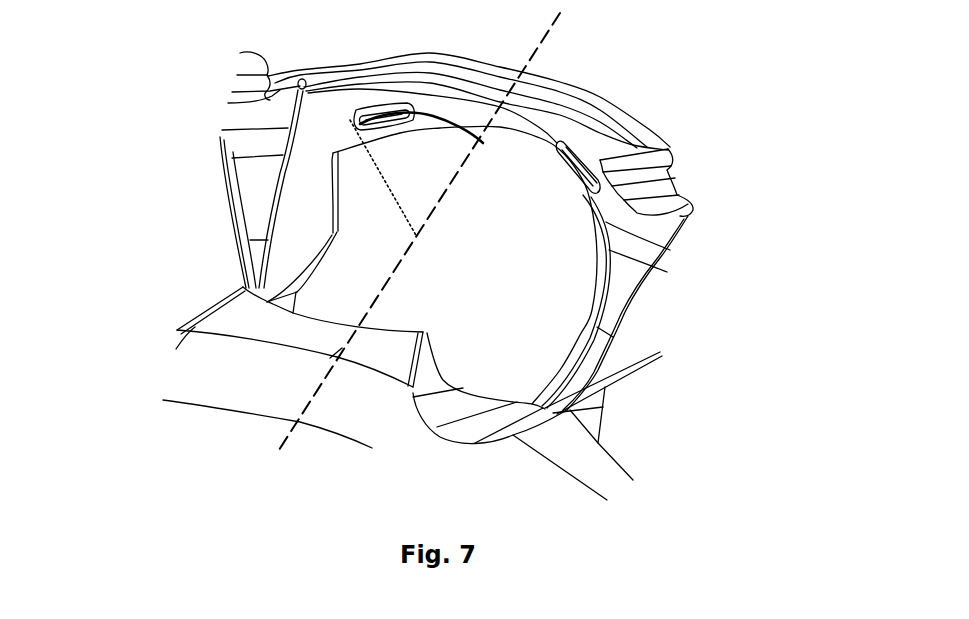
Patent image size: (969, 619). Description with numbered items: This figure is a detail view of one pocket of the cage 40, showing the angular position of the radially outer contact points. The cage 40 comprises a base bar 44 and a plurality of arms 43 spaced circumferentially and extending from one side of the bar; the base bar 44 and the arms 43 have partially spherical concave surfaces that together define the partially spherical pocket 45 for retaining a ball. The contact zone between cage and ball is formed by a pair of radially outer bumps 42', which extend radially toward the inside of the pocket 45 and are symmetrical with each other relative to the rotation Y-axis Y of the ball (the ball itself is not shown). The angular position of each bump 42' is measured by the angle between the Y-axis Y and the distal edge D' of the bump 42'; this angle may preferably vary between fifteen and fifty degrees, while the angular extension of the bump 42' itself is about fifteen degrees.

The cage 40 is at (162, 196).
The radially outer bumps 42' is at (508, 97).
The arms 43 is at (637, 293).
The base bar 44 is at (260, 398).
The partially spherical pocket 45 is at (511, 301).
The distal edge of the bump D' is at (355, 127).
The rotation Y-axis Y is at (439, 233).